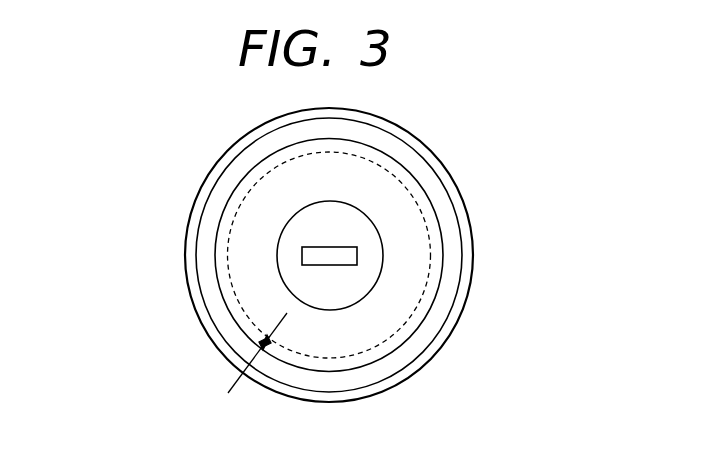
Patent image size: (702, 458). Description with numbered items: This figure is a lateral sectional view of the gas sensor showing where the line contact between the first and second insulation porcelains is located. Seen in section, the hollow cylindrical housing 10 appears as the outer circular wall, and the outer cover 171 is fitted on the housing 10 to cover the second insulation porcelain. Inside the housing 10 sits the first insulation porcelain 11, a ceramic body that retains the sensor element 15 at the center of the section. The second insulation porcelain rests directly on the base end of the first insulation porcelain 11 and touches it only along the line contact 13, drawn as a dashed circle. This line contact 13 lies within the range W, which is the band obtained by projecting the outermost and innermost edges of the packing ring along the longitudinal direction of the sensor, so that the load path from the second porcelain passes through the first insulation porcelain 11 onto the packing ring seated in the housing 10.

The hollow cylindrical housing 10 is at (244, 165).
The outer cover 171 is at (405, 139).
The first insulation porcelain 11 is at (243, 272).
The line contact 13 is at (415, 328).
The sensor element 15 is at (345, 252).
The range W is at (250, 337).